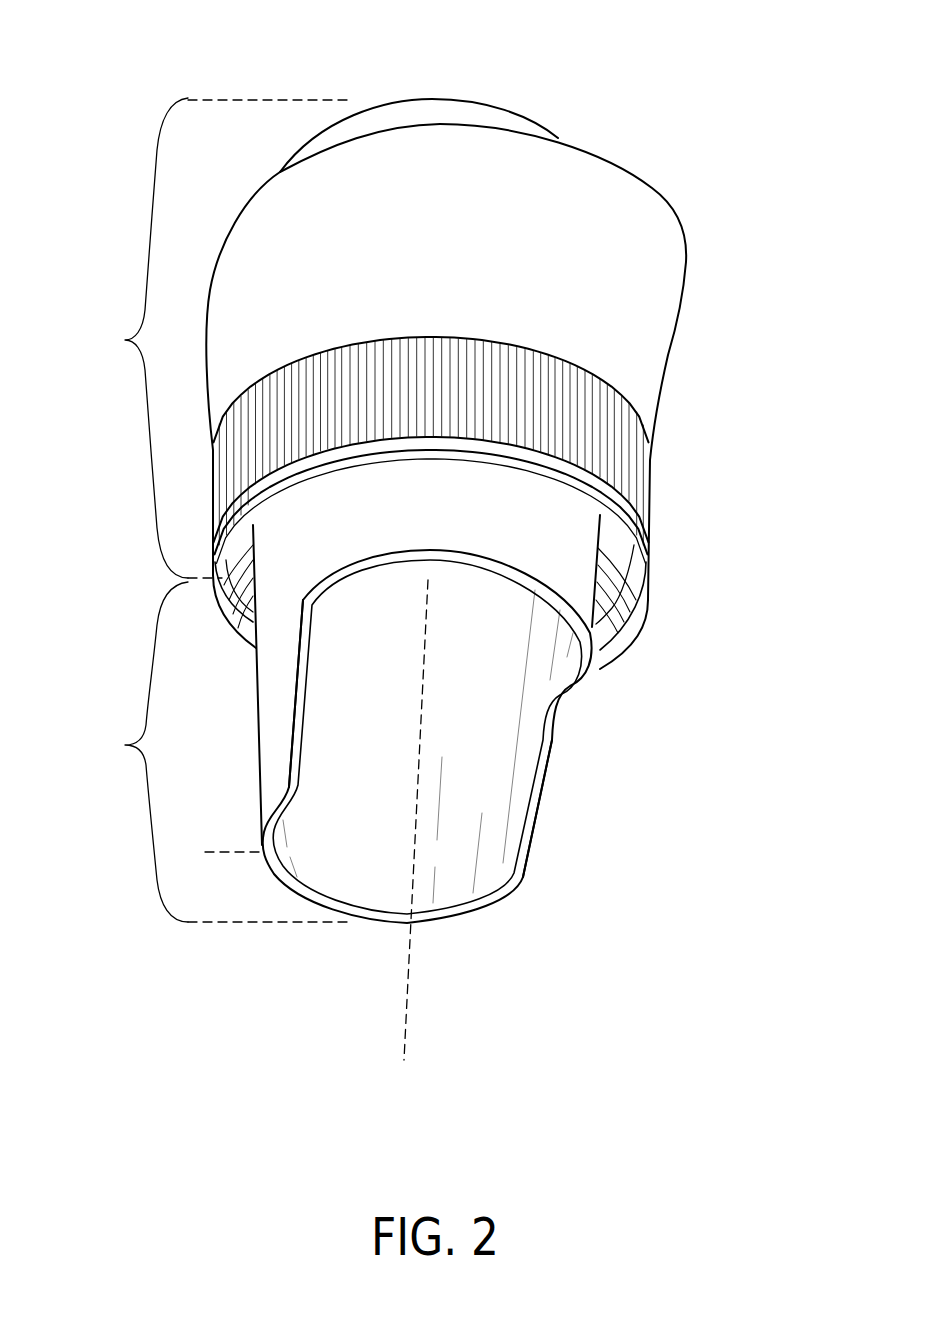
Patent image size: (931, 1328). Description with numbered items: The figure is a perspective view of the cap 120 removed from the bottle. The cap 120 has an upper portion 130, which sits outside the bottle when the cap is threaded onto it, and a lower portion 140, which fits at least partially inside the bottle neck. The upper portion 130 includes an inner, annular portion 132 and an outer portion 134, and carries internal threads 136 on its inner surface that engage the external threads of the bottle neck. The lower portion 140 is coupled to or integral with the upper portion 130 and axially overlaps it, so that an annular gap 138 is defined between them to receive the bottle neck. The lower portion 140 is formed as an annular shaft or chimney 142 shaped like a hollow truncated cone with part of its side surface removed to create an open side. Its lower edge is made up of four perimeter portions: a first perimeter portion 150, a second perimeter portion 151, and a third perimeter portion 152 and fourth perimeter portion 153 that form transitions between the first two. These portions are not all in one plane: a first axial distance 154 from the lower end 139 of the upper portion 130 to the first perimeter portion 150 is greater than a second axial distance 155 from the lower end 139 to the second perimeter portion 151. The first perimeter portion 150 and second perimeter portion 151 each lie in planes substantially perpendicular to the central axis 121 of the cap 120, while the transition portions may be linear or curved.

The cap 120 is at (254, 80).
The central axis 121 is at (407, 995).
The upper portion 130 is at (149, 338).
The inner, annular portion 132 is at (460, 108).
The outer portion 134 is at (685, 222).
The internal threads 136 is at (613, 607).
The annular gap 138 is at (600, 629).
The lower end of the upper portion 139 is at (649, 599).
The lower portion 140 is at (212, 752).
The chimney 142 is at (298, 538).
The first perimeter portion 150 is at (323, 907).
The second perimeter portion 151 is at (461, 555).
The third perimeter portion 152 is at (540, 800).
The fourth perimeter portion 153 is at (303, 658).
The first axial distance 154 is at (220, 578).
The second axial distance 155 is at (430, 456).